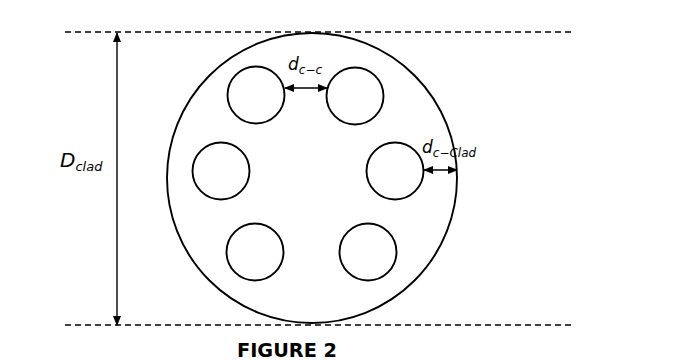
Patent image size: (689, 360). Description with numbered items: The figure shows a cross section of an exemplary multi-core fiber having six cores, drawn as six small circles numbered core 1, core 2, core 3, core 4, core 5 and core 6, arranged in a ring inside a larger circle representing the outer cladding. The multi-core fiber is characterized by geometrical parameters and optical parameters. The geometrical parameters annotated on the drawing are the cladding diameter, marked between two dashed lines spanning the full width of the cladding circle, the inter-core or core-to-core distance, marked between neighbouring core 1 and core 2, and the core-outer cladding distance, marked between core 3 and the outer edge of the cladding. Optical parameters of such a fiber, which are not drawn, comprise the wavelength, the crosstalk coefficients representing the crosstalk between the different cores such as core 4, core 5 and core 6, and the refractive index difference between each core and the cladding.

The first core 1 is at (256, 95).
The second core 2 is at (355, 96).
The third core 3 is at (395, 171).
The fourth core 4 is at (368, 252).
The fifth core 5 is at (255, 252).
The sixth core 6 is at (221, 171).